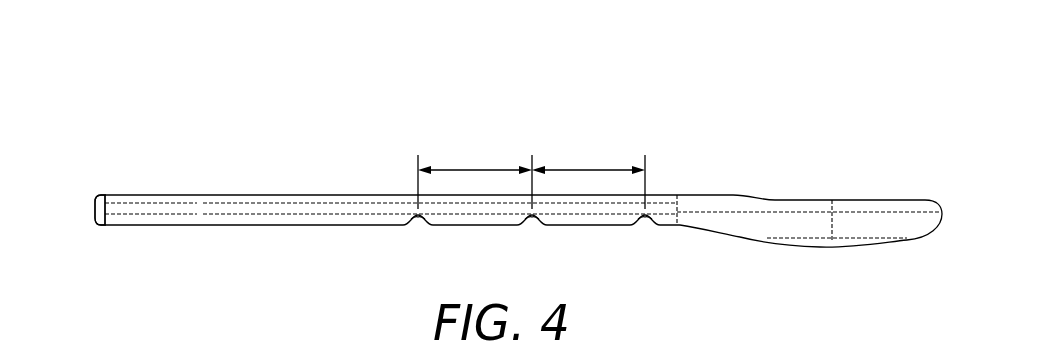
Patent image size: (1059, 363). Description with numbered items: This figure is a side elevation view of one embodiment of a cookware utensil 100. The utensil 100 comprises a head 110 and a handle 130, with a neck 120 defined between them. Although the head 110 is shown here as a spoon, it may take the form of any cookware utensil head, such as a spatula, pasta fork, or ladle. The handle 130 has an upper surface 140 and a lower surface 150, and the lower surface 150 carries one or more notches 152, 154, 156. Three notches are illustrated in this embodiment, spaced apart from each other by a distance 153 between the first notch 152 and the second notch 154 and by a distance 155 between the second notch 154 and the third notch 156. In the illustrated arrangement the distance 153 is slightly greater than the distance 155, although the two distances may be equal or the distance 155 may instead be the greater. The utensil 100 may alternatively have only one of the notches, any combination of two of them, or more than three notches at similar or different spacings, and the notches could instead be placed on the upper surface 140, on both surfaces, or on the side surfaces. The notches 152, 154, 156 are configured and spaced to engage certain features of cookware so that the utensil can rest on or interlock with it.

The cookware utensil 100 is at (131, 123).
The head 110 is at (888, 195).
The neck 120 is at (686, 228).
The handle 130 is at (136, 194).
The upper surface 140 is at (214, 195).
The lower surface 150 is at (138, 227).
The notch 152 is at (420, 225).
The distance 153 is at (477, 165).
The notch 154 is at (532, 225).
The distance 155 is at (593, 165).
The notch 156 is at (646, 225).